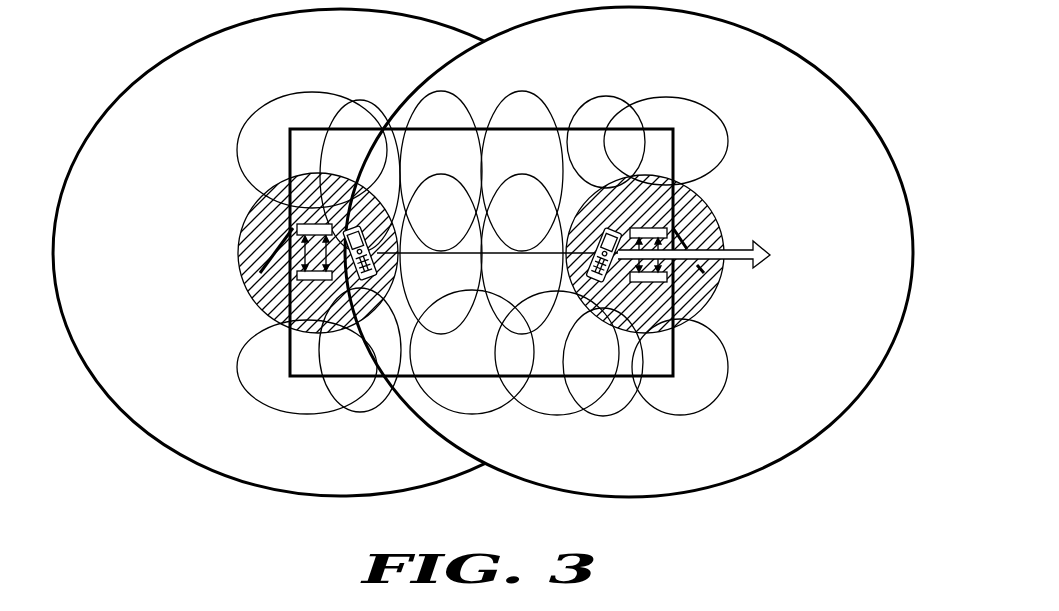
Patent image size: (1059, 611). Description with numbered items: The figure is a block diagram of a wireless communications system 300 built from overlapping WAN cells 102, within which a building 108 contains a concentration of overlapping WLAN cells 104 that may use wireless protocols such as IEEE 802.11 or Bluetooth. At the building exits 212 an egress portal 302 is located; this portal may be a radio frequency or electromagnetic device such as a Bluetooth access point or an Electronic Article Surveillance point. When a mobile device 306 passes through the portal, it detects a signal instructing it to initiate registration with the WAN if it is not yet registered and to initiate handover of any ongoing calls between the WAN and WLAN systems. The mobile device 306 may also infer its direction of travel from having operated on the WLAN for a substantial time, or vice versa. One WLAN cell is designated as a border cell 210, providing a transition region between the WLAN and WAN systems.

The wireless communication system 300 is at (695, 555).
The WAN cells 102 is at (340, 470).
The WLAN cells 104 is at (499, 96).
The building 108 is at (290, 172).
The border cell 210 is at (247, 218).
The building exits 212 is at (273, 249).
The egress portal 302 is at (297, 274).
The mobile device 306 is at (617, 286).